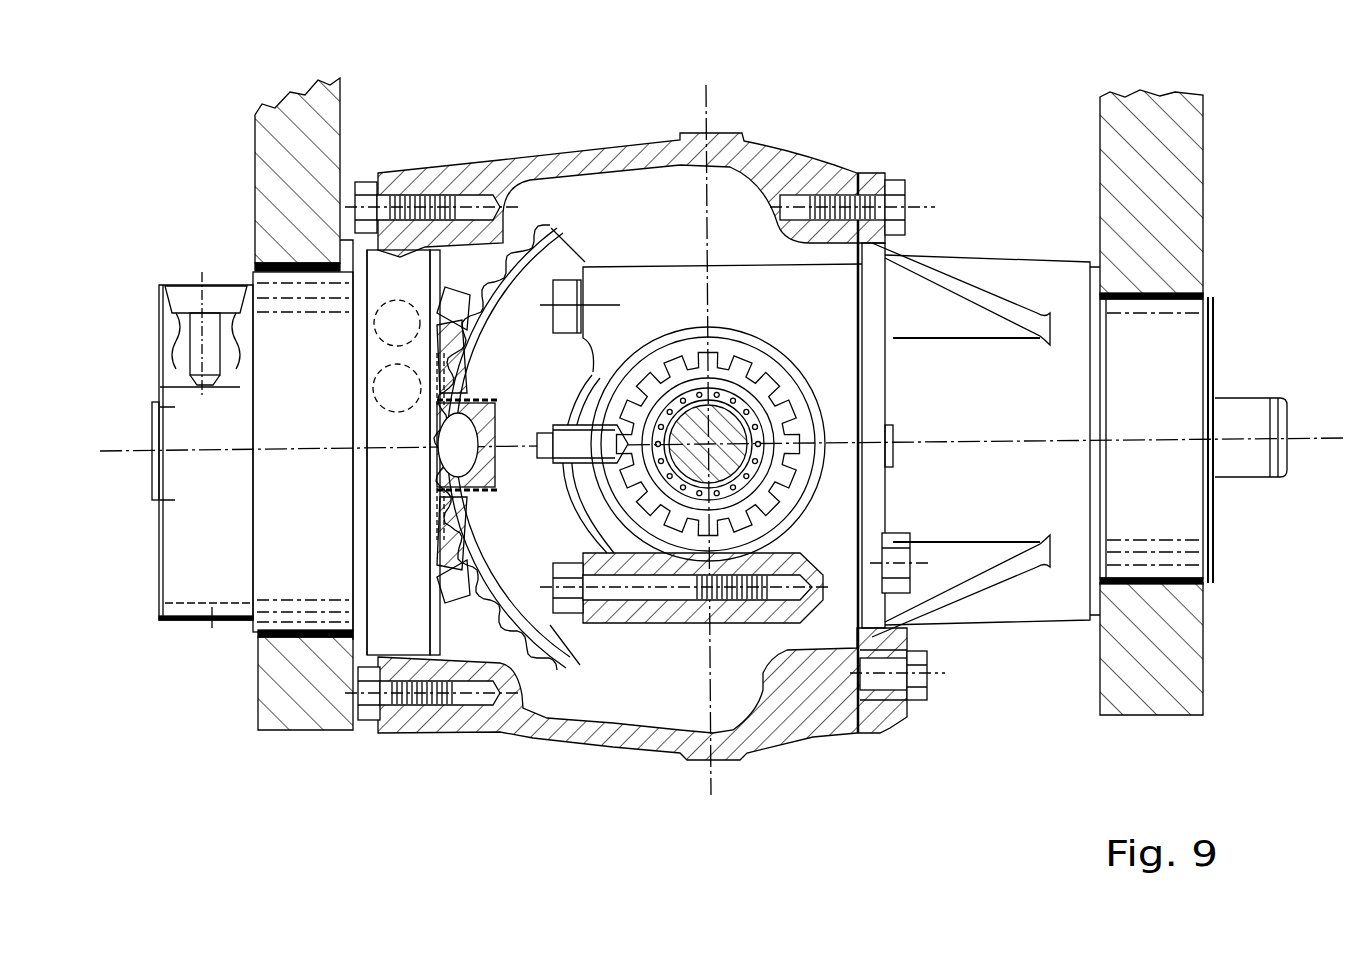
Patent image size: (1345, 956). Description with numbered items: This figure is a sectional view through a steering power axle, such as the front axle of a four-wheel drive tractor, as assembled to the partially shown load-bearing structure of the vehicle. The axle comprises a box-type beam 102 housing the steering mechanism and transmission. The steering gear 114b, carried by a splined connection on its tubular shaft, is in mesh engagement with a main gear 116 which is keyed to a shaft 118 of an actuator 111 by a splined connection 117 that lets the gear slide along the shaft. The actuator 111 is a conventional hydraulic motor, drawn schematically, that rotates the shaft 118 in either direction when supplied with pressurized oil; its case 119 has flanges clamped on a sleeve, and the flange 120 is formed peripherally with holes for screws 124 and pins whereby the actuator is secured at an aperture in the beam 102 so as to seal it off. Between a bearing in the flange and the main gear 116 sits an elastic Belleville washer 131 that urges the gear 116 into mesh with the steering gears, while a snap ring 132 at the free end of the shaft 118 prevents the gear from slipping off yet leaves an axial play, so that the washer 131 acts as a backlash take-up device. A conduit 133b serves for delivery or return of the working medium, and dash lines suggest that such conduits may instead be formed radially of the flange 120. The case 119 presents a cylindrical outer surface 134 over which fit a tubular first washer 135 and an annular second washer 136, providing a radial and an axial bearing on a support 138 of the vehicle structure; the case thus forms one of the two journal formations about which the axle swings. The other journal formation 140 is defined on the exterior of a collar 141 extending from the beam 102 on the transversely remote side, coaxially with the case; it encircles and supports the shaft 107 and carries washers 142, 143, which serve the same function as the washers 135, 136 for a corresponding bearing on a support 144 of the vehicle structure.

The box-type beam 102 is at (617, 152).
The shaft 107 is at (1253, 477).
The actuator 111 is at (170, 493).
The case 119 is at (163, 627).
The steering gear 114b is at (583, 260).
The main gear 116 is at (462, 297).
The splined connection 117 is at (478, 504).
The shaft 118 is at (500, 435).
The flange 120 is at (410, 592).
The screws 124 is at (356, 188).
The Belleville washer 131 is at (433, 530).
The snap ring 132 is at (490, 397).
The conduit 133b is at (196, 292).
The cylindrical outer surface 134 is at (212, 628).
The first washer 135 is at (268, 545).
The second washer 136 is at (358, 458).
The support 138 is at (268, 166).
The journal formation 140 is at (1213, 293).
The collar 141 is at (1003, 628).
The washer 142 is at (1180, 523).
The washer 143 is at (1103, 487).
The support 144 is at (1183, 660).